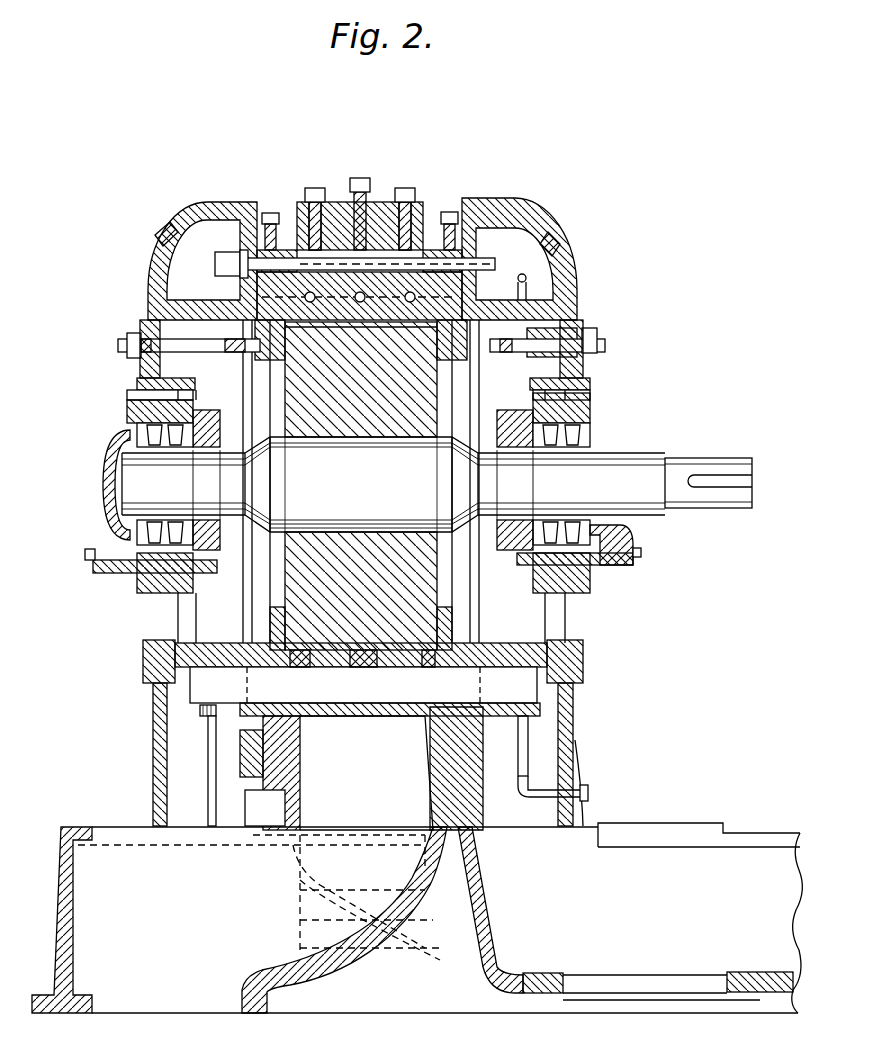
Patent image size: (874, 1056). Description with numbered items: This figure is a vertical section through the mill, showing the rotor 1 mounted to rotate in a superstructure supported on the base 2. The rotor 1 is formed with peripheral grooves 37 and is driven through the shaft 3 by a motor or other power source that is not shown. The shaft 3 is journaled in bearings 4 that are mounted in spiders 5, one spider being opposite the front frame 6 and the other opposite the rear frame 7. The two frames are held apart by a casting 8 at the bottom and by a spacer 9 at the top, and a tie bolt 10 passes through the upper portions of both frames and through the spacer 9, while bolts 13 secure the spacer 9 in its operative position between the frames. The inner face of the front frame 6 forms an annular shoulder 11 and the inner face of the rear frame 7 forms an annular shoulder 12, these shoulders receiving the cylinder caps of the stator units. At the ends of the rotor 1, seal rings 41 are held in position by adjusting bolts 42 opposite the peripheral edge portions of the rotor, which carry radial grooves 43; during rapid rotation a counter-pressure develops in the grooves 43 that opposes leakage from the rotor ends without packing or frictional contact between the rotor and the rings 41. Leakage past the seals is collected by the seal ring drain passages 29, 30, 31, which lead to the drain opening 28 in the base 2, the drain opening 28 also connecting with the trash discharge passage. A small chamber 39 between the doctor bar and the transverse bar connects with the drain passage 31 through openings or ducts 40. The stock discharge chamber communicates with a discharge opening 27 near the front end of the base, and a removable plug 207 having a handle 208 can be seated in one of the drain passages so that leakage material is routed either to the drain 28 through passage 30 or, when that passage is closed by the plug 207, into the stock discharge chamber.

The rotor 1 is at (361, 486).
The base 2 is at (683, 838).
The shaft 3 is at (628, 462).
The bearings 4 is at (143, 558).
The spiders 5 is at (148, 368).
The front frame 6 is at (225, 202).
The rear frame 7 is at (475, 198).
The casting 8 is at (293, 760).
The spacer 9 is at (373, 203).
The tie bolt 10 is at (215, 263).
The annular shoulder 11 is at (278, 230).
The annular shoulder 12 is at (425, 212).
The bolts 13 is at (264, 212).
The discharge opening 27 is at (243, 997).
The drain opening 28 is at (558, 972).
The seal ring drain passage 29 is at (232, 657).
The seal ring drain passage 30 is at (240, 707).
The seal ring drain passage 31 is at (363, 703).
The peripheral grooves 37 is at (362, 324).
The small chamber 39 is at (412, 652).
The openings or ducts 40 is at (385, 665).
The seal rings 41 is at (253, 377).
The adjusting bolts 42 is at (605, 345).
The radial grooves 43 is at (118, 345).
The removable plug 207 is at (205, 717).
The handle 208 is at (210, 762).